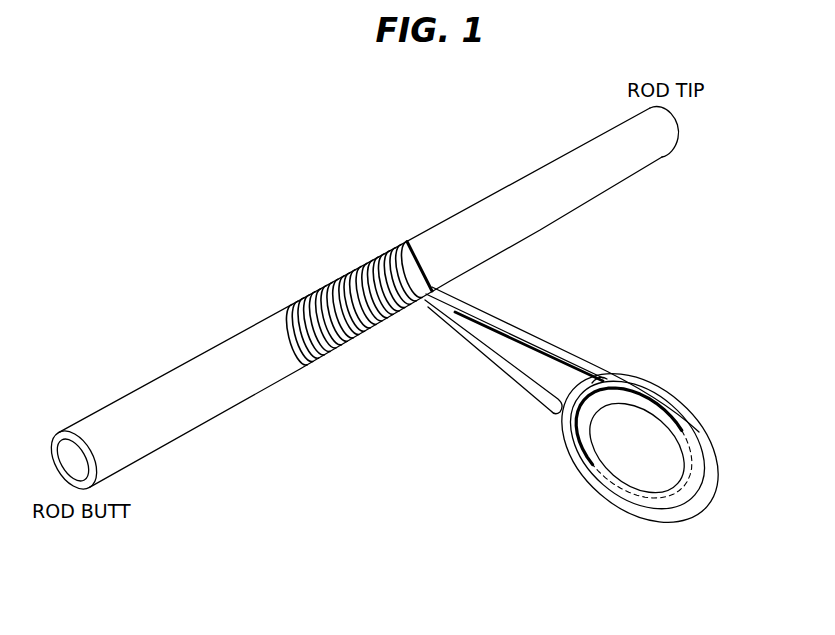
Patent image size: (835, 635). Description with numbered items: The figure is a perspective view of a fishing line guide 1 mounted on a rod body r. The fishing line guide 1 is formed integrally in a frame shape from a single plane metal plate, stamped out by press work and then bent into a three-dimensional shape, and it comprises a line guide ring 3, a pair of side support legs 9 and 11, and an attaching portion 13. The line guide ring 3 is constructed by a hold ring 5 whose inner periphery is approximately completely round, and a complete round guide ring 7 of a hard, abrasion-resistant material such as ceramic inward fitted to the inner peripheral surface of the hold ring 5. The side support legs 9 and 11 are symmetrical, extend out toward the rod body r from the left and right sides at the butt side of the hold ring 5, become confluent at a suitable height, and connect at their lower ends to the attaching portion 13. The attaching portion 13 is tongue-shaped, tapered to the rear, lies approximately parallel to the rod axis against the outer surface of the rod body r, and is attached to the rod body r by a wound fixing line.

The rod body r is at (482, 202).
The fishing line guide 1 is at (603, 422).
The line guide ring 3 is at (548, 424).
The hold ring 5 is at (697, 428).
The guide ring 7 is at (675, 505).
The side support leg 9 is at (522, 332).
The side support leg 11 is at (479, 376).
The attaching portion 13 is at (367, 336).